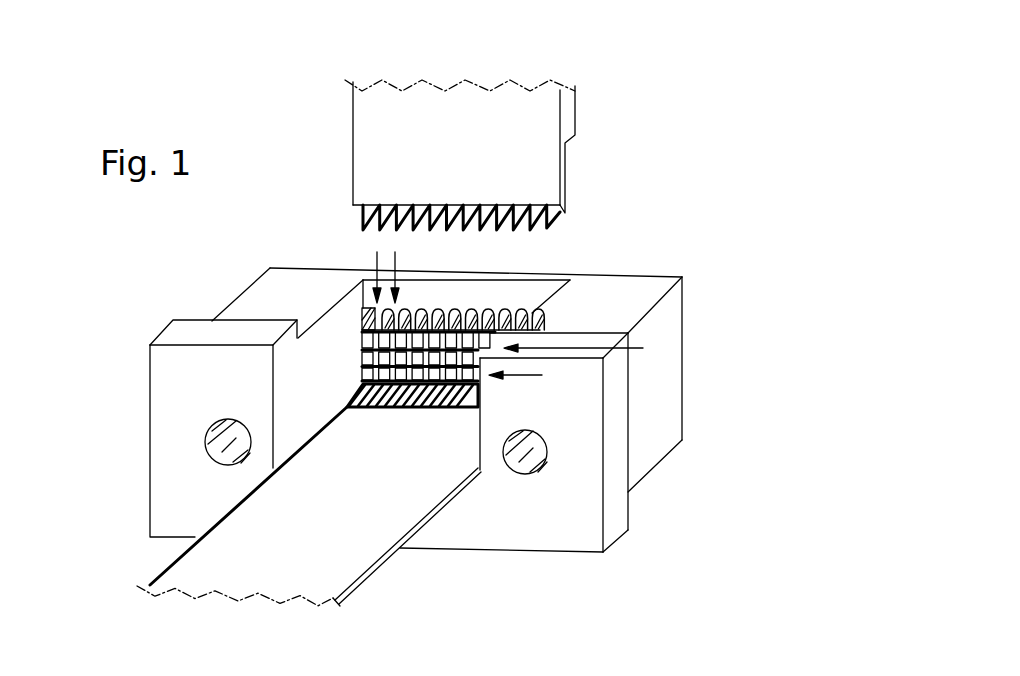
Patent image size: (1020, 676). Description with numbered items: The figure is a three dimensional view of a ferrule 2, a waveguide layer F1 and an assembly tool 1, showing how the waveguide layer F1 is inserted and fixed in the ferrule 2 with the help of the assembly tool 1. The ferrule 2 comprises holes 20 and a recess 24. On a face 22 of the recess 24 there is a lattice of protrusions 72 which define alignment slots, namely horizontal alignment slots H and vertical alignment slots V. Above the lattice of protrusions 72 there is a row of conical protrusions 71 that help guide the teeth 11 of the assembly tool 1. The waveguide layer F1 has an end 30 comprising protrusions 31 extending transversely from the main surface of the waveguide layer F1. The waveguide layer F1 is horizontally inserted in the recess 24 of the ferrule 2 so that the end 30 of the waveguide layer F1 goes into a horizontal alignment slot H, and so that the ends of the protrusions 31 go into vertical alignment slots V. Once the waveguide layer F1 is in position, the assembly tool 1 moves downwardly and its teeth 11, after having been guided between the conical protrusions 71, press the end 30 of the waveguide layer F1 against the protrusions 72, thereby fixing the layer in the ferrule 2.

The assembly tool 1 is at (459, 120).
The teeth 11 is at (451, 214).
The ferrule 2 is at (487, 369).
The face 22 is at (533, 301).
The recess 24 is at (317, 377).
The holes 20 is at (226, 446).
The end 30 is at (443, 336).
The protrusions 31 is at (441, 412).
The conical protrusions 71 is at (452, 327).
The lattice of protrusions 72 is at (362, 373).
The waveguide layer F1 is at (325, 573).
The horizontal alignment slots H is at (577, 363).
The vertical alignment slots V is at (386, 268).